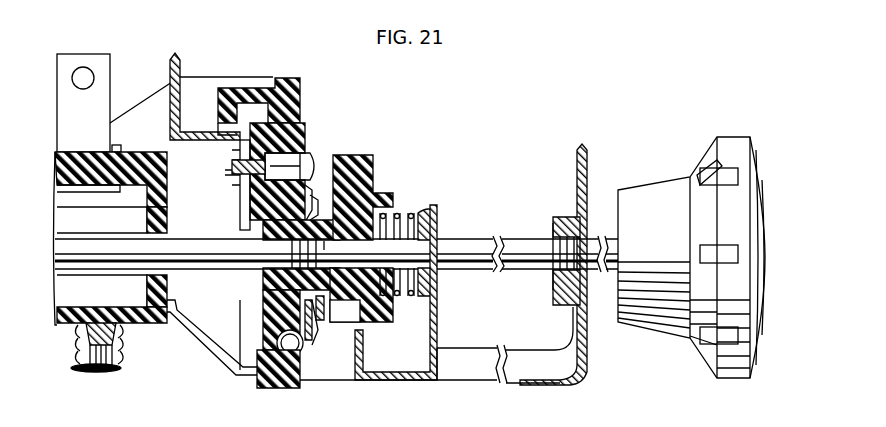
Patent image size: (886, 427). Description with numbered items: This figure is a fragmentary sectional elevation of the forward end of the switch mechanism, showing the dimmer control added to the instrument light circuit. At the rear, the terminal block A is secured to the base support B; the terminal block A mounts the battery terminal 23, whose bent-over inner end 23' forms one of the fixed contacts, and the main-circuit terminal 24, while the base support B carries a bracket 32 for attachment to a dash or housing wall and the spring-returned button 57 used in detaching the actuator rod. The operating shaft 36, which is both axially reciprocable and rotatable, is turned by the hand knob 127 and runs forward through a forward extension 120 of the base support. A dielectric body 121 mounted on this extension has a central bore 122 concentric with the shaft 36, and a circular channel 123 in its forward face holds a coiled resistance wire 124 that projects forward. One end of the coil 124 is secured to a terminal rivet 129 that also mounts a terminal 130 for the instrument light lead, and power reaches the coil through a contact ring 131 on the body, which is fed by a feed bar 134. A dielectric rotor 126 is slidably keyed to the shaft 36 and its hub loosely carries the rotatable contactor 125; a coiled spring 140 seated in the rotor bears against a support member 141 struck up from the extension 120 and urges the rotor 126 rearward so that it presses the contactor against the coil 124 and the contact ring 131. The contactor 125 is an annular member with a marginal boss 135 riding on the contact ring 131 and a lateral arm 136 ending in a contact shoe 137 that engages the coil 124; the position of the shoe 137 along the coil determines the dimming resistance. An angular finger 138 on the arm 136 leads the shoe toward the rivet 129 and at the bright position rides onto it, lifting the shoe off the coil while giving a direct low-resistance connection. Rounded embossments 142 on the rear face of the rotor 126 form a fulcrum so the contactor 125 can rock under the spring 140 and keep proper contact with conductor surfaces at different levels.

The battery terminal 23 is at (202, 223).
The inner end of battery terminal 23' is at (88, 200).
The main-circuit terminal 24 is at (237, 54).
The terminal block A is at (56, 161).
The base support B is at (57, 306).
The bracket 32 is at (462, 353).
The operating shaft 36 is at (461, 246).
The spring-returned button 57 is at (114, 352).
The forward extension of the base support 120 is at (239, 380).
The dielectric body 121 is at (300, 132).
The central bore 122 is at (270, 222).
The circular channel 123 is at (291, 390).
The coiled resistance wire 124 is at (250, 341).
The rotatable contactor 125 is at (375, 193).
The dielectric rotor 126 is at (386, 312).
The hand knob 127 is at (665, 190).
The terminal rivet 129 is at (311, 160).
The terminal 130 is at (172, 81).
The contact ring 131 is at (248, 205).
The feed bar 134 is at (642, 425).
The marginal boss 135 is at (318, 215).
The lateral arm 136 is at (262, 316).
The contact shoe 137 is at (320, 346).
The finger 138 is at (326, 313).
The coiled spring 140 is at (412, 216).
The support member 141 is at (437, 327).
The embossments 142 is at (325, 250).